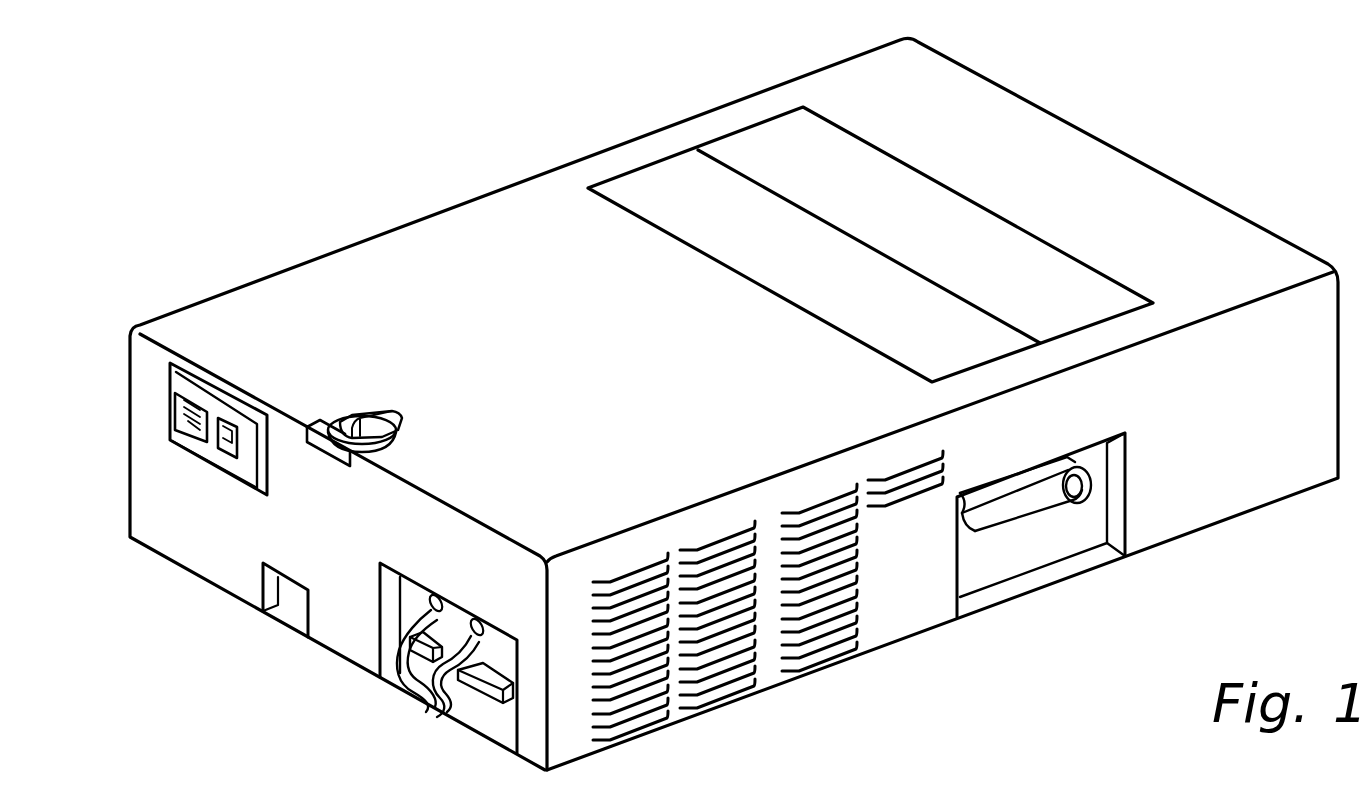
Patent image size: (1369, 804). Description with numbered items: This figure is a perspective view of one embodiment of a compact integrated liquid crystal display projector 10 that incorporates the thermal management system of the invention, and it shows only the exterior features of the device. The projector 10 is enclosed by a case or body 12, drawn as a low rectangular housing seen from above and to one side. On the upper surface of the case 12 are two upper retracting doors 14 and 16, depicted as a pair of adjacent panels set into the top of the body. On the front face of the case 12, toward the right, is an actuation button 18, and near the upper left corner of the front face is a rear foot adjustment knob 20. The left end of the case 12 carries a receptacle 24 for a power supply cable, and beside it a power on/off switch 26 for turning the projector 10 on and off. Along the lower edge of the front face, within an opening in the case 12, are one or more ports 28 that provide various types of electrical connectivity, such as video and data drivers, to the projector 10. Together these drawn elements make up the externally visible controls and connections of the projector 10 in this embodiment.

The compact integrated liquid crystal display projector 10 is at (152, 213).
The case 12 is at (352, 274).
The upper retracting door 14 is at (763, 253).
The upper retracting door 16 is at (853, 195).
The actuation button 18 is at (1040, 513).
The rear foot adjustment knob 20 is at (372, 412).
The receptacle for a power supply cable 24 is at (172, 408).
The power on/off switch 26 is at (205, 450).
The ports 28 is at (440, 708).